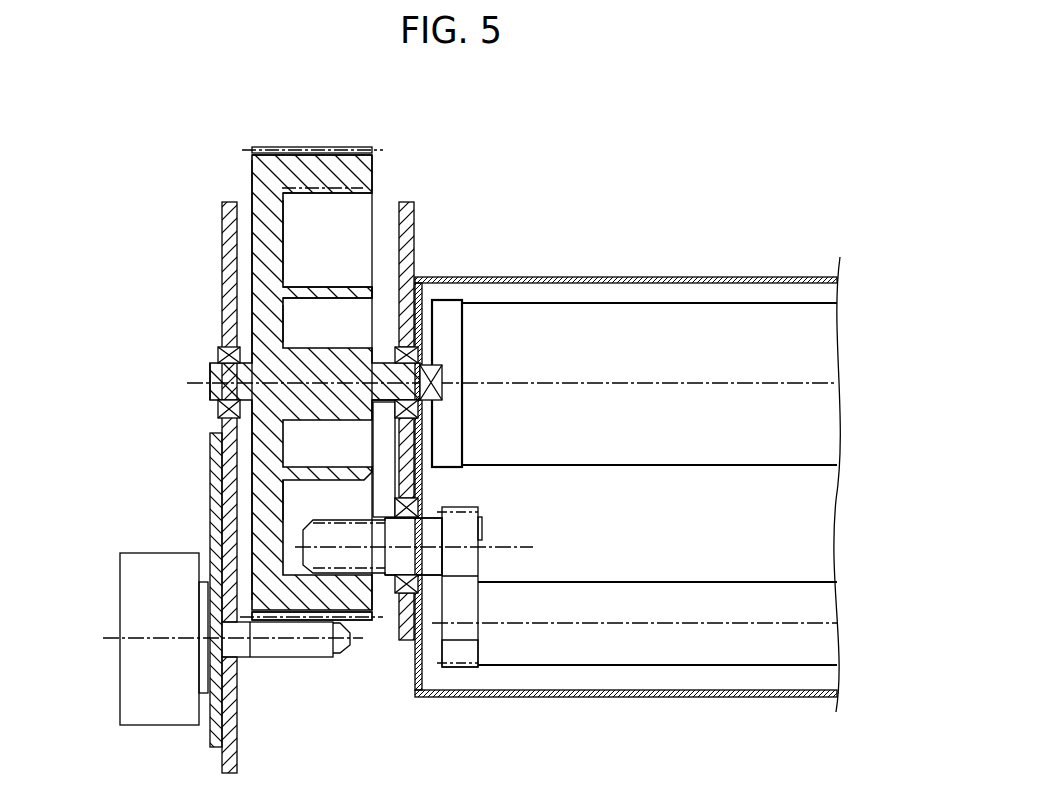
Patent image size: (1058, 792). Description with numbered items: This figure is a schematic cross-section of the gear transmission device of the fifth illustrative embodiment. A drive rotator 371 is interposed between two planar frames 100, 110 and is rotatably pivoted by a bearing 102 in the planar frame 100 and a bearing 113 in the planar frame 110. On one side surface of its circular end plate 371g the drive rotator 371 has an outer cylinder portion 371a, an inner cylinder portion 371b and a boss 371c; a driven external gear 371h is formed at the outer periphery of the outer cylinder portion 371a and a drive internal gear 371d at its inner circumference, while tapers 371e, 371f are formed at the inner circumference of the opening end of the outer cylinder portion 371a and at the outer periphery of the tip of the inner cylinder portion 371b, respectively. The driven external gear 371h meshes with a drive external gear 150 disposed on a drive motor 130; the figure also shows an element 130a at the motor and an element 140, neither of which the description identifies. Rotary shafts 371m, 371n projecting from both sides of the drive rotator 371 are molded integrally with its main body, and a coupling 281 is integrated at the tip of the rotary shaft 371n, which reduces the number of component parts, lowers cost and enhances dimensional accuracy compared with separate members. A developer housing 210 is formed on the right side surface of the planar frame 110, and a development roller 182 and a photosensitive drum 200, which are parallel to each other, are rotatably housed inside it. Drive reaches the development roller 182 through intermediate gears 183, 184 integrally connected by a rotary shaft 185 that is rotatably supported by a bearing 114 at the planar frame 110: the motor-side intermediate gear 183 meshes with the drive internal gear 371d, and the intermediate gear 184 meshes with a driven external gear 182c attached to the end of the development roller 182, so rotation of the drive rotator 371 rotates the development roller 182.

The drive rotator 371 is at (312, 140).
The outer cylinder portion 371a is at (368, 177).
The inner cylinder portion 371b is at (313, 284).
The boss 371c is at (313, 346).
The drive internal gear 371d is at (340, 568).
The taper 371e is at (365, 193).
The taper 371f is at (368, 283).
The circular end plate 371g is at (252, 177).
The driven external gear 371h is at (293, 612).
The rotary shaft 371m is at (210, 397).
The rotary shaft 371n is at (410, 391).
The planar frame 100 is at (222, 245).
The bearing 102 is at (217, 353).
The planar frame 110 is at (414, 229).
The bearing 113 is at (420, 355).
The bearing 114 is at (420, 510).
The drive motor 130 is at (158, 552).
The motor shaft 130a is at (243, 653).
The support plate 140 is at (215, 480).
The drive external gear 150 is at (330, 645).
The intermediate gear 183 is at (330, 527).
The intermediate gear 184 is at (477, 513).
The rotary shaft 185 is at (432, 560).
The development roller 182 is at (683, 600).
The driven external gear 182c is at (458, 655).
The photosensitive drum 200 is at (747, 323).
The developer housing 210 is at (640, 262).
The coupling 281 is at (442, 375).